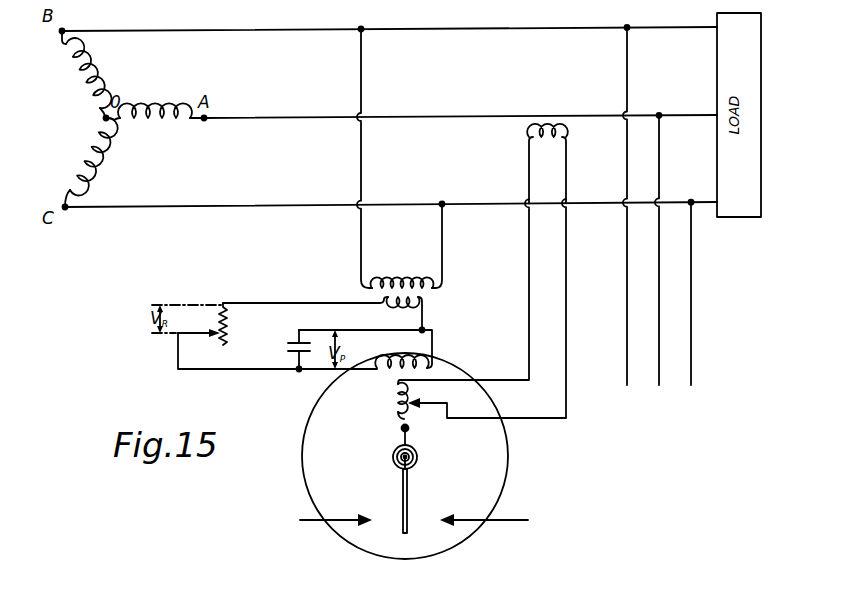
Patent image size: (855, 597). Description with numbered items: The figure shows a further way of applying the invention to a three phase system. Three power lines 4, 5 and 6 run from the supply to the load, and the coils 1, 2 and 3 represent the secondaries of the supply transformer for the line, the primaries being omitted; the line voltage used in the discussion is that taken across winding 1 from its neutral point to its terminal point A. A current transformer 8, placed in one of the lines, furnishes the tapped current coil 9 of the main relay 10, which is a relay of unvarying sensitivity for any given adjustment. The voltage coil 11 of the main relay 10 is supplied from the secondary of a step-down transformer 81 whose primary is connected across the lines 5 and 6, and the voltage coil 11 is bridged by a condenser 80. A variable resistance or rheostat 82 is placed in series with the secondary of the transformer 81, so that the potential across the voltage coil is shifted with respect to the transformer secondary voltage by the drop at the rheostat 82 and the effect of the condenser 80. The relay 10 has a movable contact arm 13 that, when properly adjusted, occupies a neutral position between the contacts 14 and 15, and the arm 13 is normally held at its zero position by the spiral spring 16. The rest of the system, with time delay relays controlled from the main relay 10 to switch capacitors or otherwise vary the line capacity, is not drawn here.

The coil 1 is at (150, 108).
The coil 2 is at (68, 79).
The coil 3 is at (72, 155).
The power line 4 is at (583, 118).
The power line 5 is at (580, 30).
The power line 6 is at (583, 205).
The current transformer 8 is at (522, 133).
The current coil 9 is at (394, 401).
The main relay 10 is at (510, 482).
The voltage coil 11 is at (404, 360).
The movable contact arm 13 is at (403, 490).
The contact 14 is at (455, 514).
The contact 15 is at (366, 514).
The spiral spring 16 is at (416, 464).
The condenser 80 is at (288, 349).
The step-down transformer 81 is at (428, 298).
The rheostat 82 is at (229, 332).